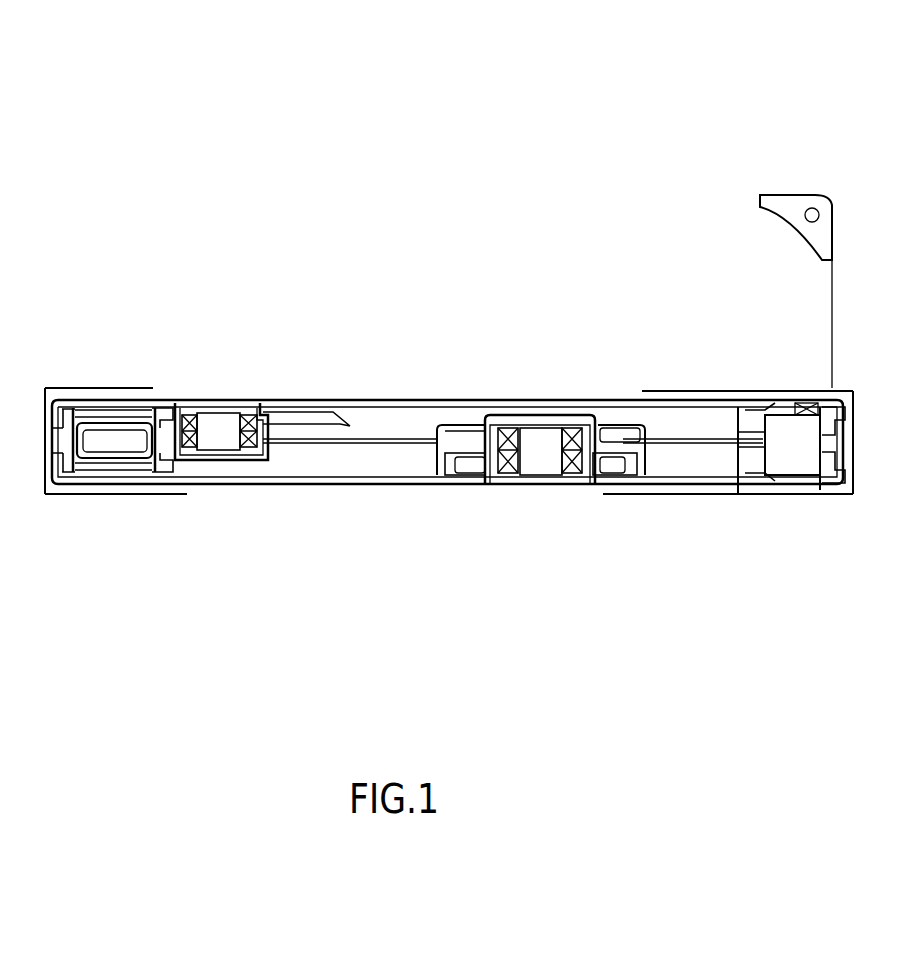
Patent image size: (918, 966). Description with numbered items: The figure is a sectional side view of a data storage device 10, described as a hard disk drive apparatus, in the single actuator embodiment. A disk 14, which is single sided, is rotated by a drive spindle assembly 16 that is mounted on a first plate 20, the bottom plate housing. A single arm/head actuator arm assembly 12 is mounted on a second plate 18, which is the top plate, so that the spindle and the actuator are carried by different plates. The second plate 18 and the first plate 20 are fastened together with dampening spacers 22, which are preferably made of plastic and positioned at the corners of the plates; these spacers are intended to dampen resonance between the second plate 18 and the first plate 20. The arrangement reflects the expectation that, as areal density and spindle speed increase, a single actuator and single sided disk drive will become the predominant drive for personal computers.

The data storage device 10 is at (407, 145).
The single actuator assembly 12 is at (218, 428).
The disk 14 is at (670, 448).
The spindle assembly 16 is at (547, 445).
The second plate 18 is at (632, 402).
The first plate 20 is at (242, 483).
The dampening spacers 22 is at (828, 197).